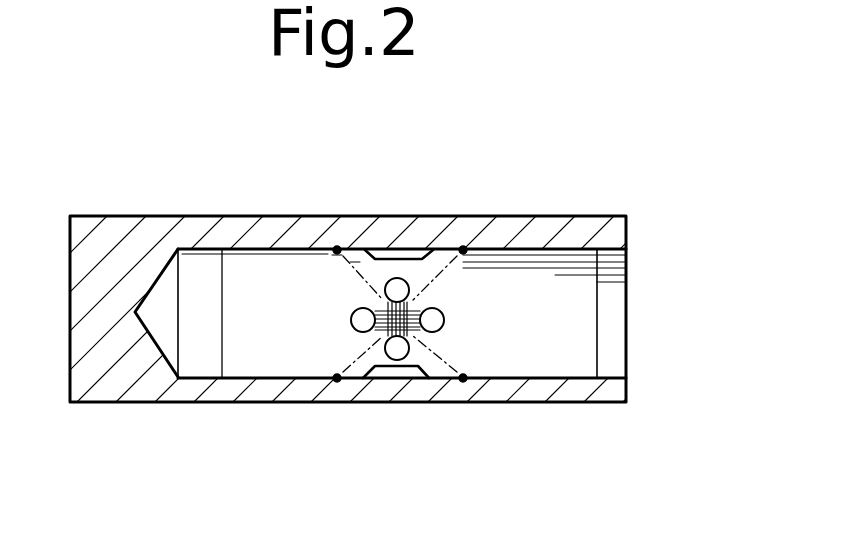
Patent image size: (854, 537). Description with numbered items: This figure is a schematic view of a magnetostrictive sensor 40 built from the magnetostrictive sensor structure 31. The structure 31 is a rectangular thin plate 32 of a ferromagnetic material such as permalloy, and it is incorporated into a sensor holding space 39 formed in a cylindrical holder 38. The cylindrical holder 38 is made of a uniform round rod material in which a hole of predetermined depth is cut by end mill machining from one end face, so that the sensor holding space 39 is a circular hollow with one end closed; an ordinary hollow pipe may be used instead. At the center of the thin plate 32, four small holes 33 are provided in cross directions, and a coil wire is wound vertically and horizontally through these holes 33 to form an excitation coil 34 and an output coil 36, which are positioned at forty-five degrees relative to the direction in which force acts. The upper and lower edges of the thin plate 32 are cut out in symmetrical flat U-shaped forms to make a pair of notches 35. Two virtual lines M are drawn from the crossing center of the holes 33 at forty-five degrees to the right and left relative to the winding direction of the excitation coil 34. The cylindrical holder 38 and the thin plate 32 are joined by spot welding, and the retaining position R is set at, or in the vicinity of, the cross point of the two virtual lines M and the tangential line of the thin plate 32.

The magnetostrictive sensor 40 is at (249, 211).
The cylindrical holder 38 is at (587, 236).
The magnetostrictive sensor structure 31 is at (562, 290).
The thin plate 32 is at (557, 363).
The sensor holding space 39 is at (197, 352).
The small holes 33 is at (390, 281).
The excitation coil 34 is at (409, 306).
The notches 35 is at (400, 257).
The output coil 36 is at (382, 378).
The retaining position R is at (337, 248).
The virtual lines M is at (383, 398).